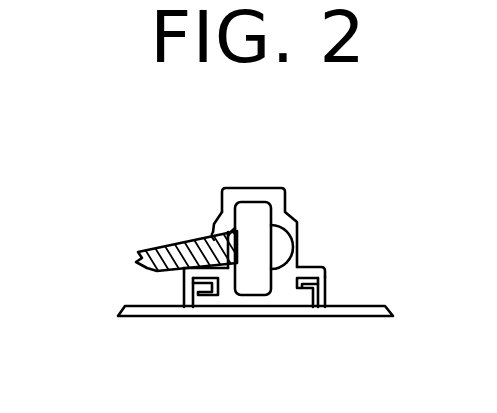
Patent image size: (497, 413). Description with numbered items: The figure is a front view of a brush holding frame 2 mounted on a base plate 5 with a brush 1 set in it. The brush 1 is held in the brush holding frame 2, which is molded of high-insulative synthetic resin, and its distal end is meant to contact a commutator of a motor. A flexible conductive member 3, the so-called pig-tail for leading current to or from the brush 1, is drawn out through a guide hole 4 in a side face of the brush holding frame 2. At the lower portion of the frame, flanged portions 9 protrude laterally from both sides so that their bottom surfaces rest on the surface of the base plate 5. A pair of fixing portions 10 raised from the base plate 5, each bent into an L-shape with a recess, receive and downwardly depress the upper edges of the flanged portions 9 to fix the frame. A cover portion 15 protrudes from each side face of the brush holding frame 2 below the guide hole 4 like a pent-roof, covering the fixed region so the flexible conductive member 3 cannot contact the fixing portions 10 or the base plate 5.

The brush 1 is at (256, 227).
The brush holding frame 2 is at (277, 202).
The flexible conductive member 3 is at (157, 246).
The guide hole 4 is at (212, 230).
The base plate 5 is at (143, 313).
The flanged portion 9 is at (203, 299).
The fixing portion 10 is at (178, 307).
The cover portion 15 is at (184, 270).